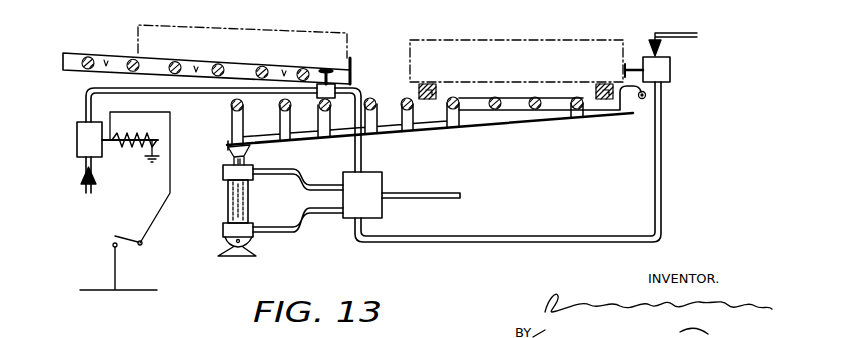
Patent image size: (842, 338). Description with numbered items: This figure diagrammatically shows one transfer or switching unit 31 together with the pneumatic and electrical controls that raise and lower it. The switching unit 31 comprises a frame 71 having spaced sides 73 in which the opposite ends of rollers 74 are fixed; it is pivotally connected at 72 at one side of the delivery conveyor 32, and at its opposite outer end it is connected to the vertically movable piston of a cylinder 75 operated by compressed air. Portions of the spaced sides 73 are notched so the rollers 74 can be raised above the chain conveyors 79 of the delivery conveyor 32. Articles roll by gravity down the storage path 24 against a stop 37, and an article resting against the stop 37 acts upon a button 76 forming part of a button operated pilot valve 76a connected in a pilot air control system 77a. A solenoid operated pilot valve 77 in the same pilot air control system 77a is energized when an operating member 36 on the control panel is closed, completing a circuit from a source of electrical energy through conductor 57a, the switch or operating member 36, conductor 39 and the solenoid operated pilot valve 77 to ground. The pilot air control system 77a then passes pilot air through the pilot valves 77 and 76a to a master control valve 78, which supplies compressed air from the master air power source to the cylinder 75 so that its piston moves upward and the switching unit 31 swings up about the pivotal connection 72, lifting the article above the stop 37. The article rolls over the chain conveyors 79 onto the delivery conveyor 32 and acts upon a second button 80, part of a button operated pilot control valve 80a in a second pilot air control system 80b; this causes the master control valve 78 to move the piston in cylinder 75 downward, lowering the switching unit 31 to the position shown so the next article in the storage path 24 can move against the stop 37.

The storage path 24 is at (117, 50).
The transfer or switching unit 31 is at (517, 137).
The delivery conveyor 32 is at (408, 92).
The operating member 36 is at (123, 250).
The stop 37 is at (353, 64).
The electrical conductor 39 is at (170, 157).
The conductor 57a is at (99, 289).
The frame 71 is at (522, 91).
The pivotal connection 72 is at (645, 98).
The spaced sides 73 is at (457, 127).
The rollers 74 is at (230, 100).
The cylinder 75 is at (228, 208).
The button 76 is at (331, 69).
The button operated pilot valve 76a is at (324, 99).
The solenoid operated pilot valve 77 is at (77, 136).
The pilot air control system 77a is at (195, 96).
The master control valve 78 is at (347, 220).
The chain conveyors 79 is at (436, 86).
The button 80 is at (637, 55).
The button operated pilot control valve 80a is at (670, 79).
The pilot air control system 80b is at (661, 200).